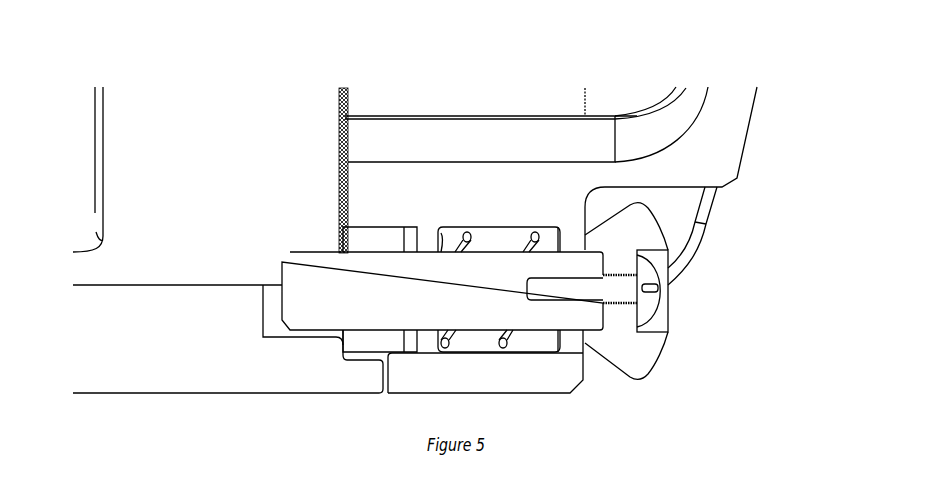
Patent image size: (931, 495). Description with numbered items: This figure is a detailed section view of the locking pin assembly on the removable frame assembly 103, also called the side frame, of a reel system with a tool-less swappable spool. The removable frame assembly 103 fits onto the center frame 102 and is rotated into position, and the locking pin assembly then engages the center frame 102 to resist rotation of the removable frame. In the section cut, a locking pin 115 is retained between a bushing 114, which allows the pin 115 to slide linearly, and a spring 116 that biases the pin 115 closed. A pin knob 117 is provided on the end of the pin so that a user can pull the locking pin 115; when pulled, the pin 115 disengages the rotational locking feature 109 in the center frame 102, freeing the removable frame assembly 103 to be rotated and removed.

The center frame 102 is at (217, 273).
The rotational locking feature 109 is at (275, 300).
The bushing 114 is at (385, 237).
The locking pin 115 is at (403, 280).
The spring 116 is at (537, 237).
The removable frame assembly 103 is at (698, 182).
The pin knob 117 is at (650, 347).